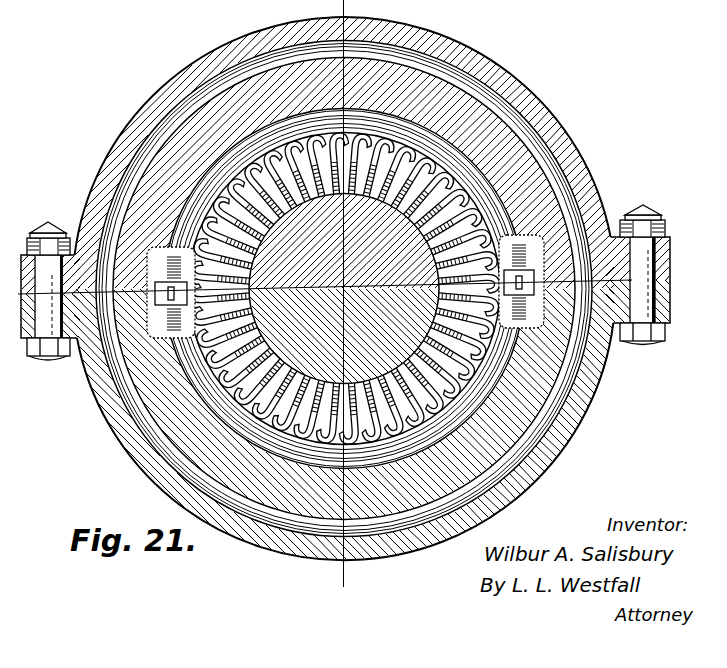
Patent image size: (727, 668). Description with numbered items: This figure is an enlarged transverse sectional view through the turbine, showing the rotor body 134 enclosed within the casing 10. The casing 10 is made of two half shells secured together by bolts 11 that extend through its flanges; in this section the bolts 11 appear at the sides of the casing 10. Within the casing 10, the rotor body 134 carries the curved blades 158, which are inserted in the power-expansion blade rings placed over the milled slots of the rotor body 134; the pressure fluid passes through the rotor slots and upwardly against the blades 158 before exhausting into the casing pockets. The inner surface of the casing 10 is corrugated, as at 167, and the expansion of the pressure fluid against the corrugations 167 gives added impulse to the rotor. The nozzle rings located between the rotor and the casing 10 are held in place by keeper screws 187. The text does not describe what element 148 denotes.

The casing 10 is at (565, 205).
The bolts 11 is at (49, 221).
The keeper screws 187 is at (602, 213).
The blades 158 is at (471, 192).
The corrugations 167 is at (466, 374).
The rotor rim 148 is at (303, 196).
The rotor body 134 is at (344, 288).